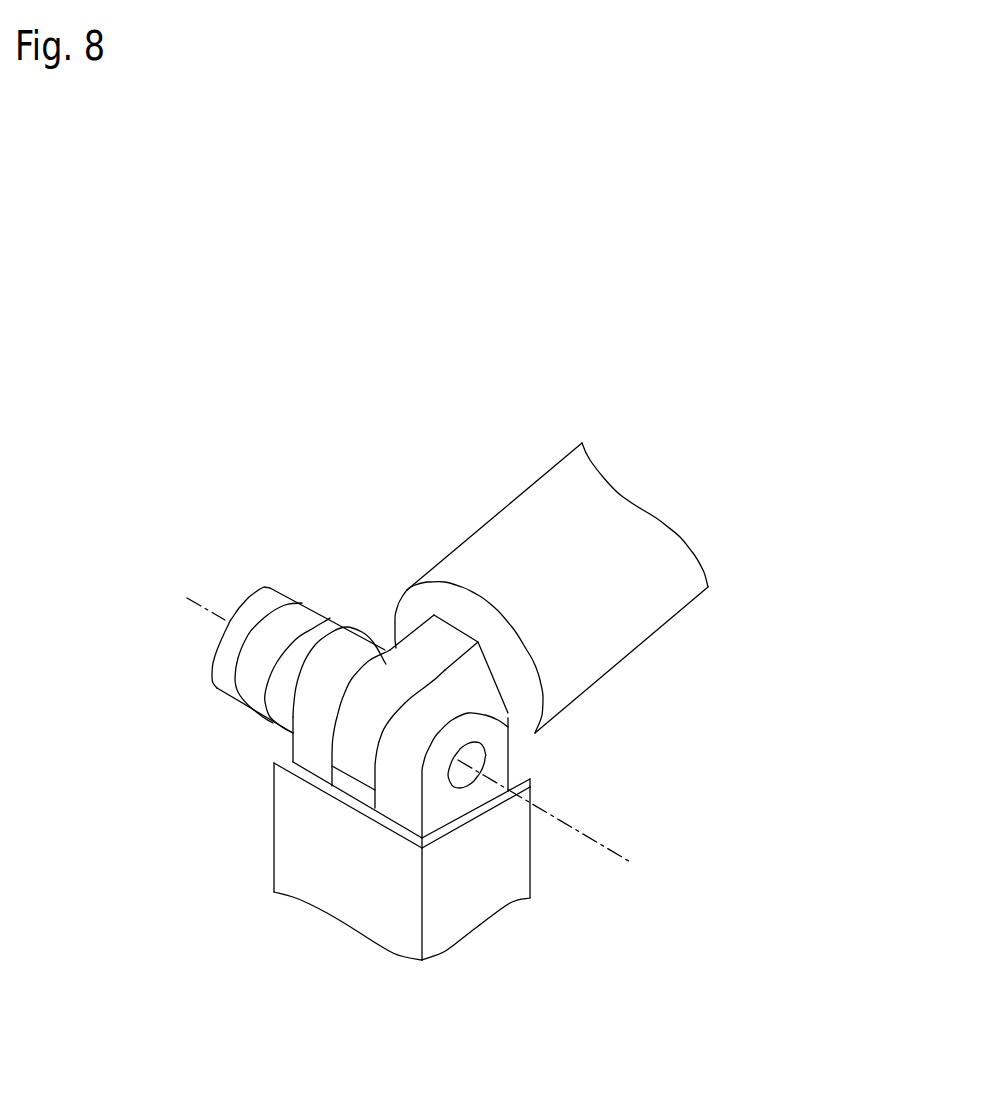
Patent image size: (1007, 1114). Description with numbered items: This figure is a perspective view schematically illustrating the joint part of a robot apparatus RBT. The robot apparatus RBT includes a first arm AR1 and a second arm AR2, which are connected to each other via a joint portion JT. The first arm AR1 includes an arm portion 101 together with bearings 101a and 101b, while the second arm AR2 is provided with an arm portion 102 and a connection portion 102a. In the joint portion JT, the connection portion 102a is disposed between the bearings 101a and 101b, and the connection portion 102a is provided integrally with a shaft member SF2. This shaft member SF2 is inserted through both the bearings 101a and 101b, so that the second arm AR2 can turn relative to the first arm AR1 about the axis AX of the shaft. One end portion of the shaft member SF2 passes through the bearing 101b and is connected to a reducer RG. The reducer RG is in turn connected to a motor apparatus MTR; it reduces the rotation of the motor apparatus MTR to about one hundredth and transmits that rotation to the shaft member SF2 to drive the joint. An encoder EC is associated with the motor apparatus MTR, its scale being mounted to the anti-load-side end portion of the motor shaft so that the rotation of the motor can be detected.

The robot apparatus RBT is at (743, 479).
The encoder EC is at (246, 608).
The motor apparatus MTR is at (305, 613).
The reducer RG is at (280, 712).
The bearing 101b is at (305, 745).
The connection portion 102a is at (383, 688).
The bearing 101a is at (500, 762).
The shaft member SF2 is at (463, 773).
The rotation axis of joint AX is at (597, 843).
The arm portion 101 is at (518, 860).
The first arm AR1 is at (360, 928).
The arm portion 102 is at (638, 630).
The second arm AR2 is at (681, 600).
The joint portion JT is at (514, 750).